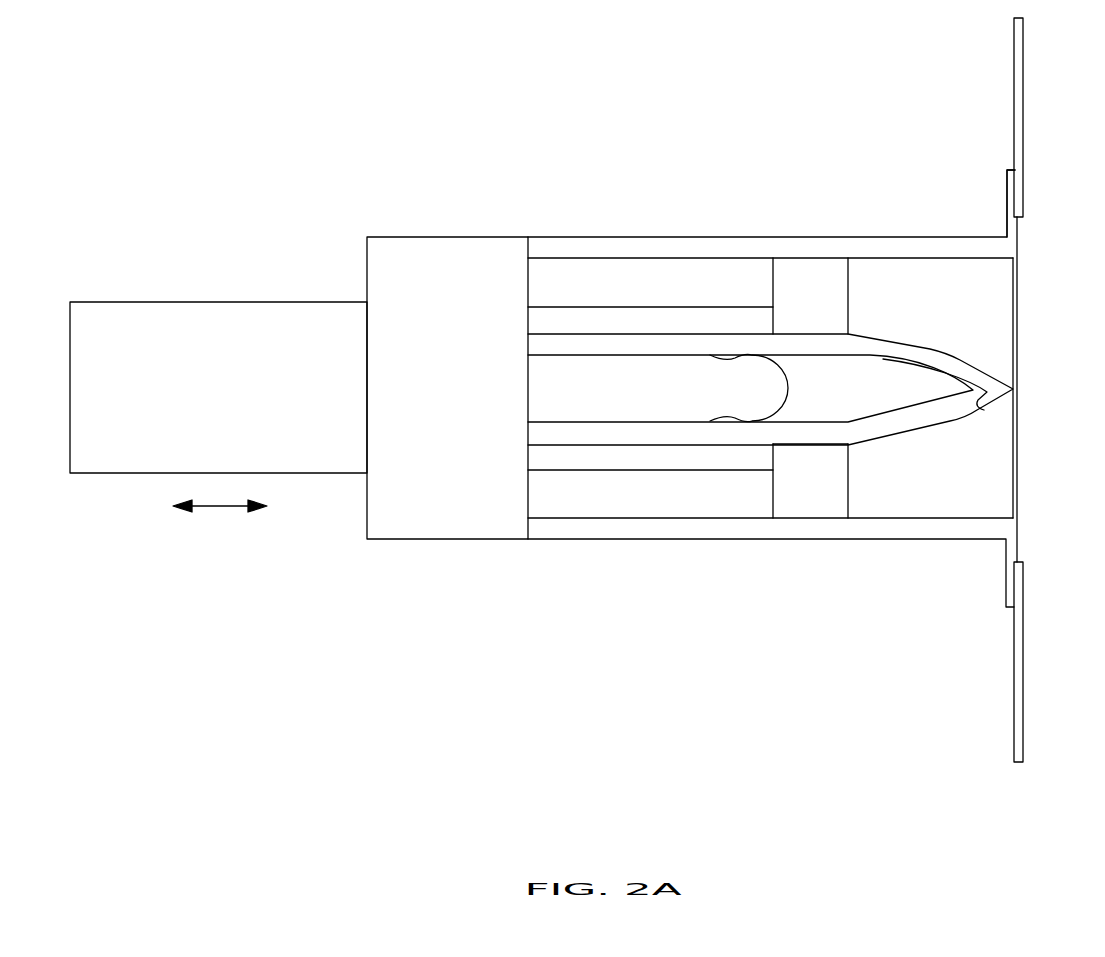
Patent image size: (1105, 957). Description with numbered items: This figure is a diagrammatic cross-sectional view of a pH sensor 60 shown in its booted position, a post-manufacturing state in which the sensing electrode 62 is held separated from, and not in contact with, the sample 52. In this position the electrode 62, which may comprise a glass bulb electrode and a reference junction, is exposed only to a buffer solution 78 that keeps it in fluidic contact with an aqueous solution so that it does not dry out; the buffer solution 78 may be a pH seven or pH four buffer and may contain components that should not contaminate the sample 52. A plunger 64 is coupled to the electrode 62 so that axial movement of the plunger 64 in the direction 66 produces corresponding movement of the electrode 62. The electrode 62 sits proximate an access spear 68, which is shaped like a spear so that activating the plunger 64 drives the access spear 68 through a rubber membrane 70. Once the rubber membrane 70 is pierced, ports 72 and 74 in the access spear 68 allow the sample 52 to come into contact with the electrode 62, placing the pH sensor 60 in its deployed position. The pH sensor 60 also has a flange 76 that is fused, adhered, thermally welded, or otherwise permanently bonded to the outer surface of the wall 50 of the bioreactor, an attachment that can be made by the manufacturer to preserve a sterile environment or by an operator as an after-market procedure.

The wall 50 is at (1014, 98).
The sample 52 is at (1082, 365).
The pH sensor 60 is at (488, 585).
The electrode 62 is at (780, 395).
The plunger 64 is at (142, 302).
The direction of axial movement 66 is at (229, 507).
The access spear 68 is at (793, 438).
The rubber membrane 70 is at (1019, 430).
The port 72 is at (937, 353).
The port 74 is at (947, 422).
The flange 76 is at (1007, 183).
The buffer solution 78 is at (825, 383).